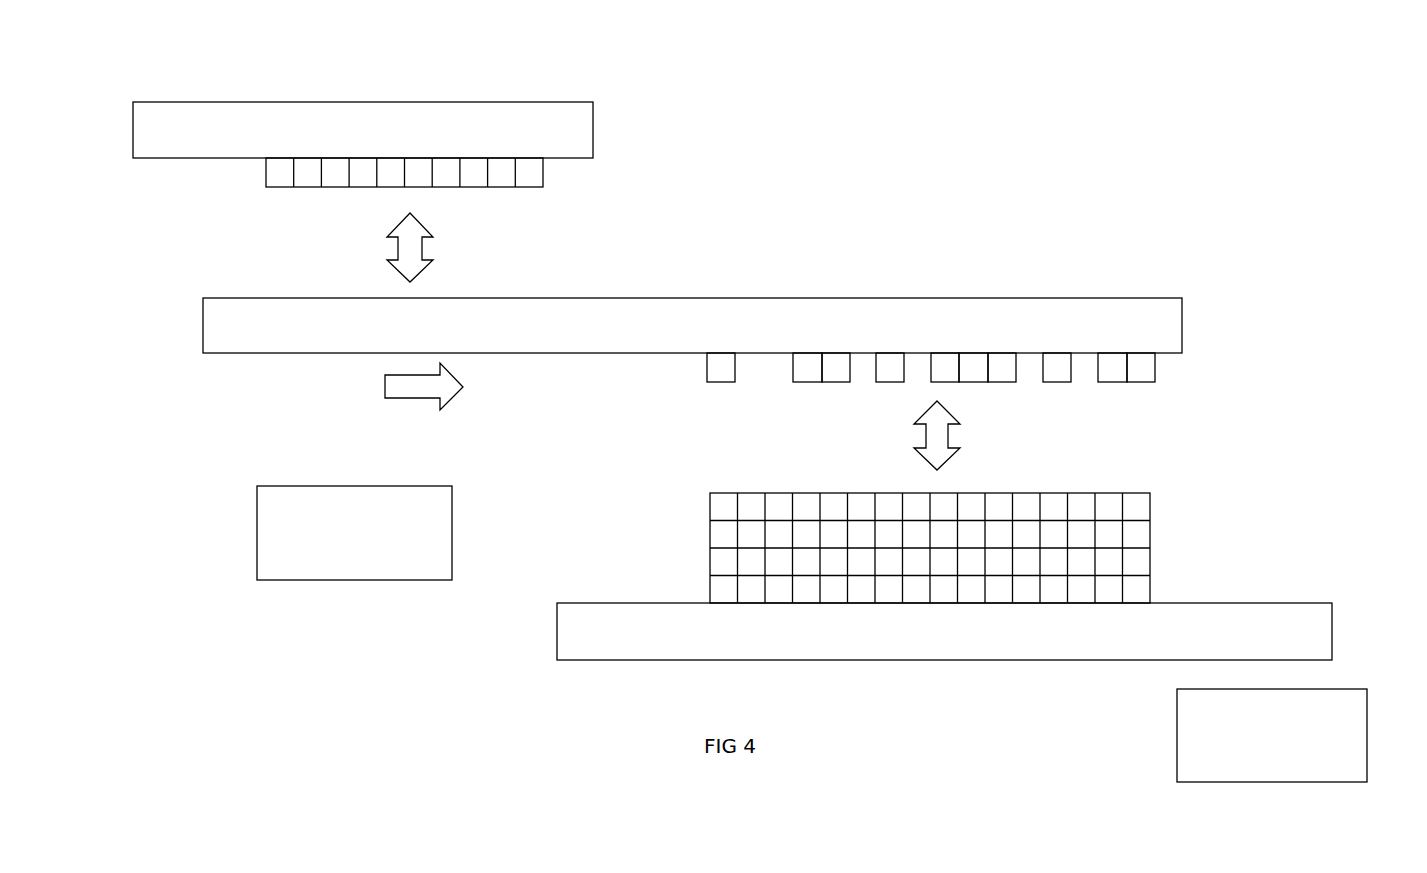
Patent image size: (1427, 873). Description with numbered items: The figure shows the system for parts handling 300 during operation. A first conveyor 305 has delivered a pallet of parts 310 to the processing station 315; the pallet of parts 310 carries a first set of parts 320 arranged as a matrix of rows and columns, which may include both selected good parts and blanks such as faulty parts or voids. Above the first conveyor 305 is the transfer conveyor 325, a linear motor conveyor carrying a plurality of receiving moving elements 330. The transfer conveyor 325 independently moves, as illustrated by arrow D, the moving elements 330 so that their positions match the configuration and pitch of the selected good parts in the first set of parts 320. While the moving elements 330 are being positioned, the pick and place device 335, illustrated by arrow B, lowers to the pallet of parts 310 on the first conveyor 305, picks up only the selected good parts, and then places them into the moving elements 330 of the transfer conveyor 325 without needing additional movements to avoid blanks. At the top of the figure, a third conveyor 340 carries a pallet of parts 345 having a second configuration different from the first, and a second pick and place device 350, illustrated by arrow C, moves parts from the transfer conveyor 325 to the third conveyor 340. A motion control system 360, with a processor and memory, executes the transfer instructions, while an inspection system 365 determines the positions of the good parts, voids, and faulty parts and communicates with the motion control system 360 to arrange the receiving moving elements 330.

The system for parts handling 300 is at (1013, 147).
The first conveyor 305 is at (1296, 607).
The pallet of parts 310 is at (1105, 490).
The processing station 315 is at (647, 513).
The parts 320 is at (982, 473).
The transfer conveyor 325 is at (1122, 298).
The moving elements 330 is at (812, 367).
The pick and place device 335 is at (916, 410).
The third conveyor 340 is at (537, 117).
The pallet of parts 345 is at (510, 210).
The second pick and place device 350 is at (413, 232).
The motion control system 360 is at (310, 582).
The inspection system 365 is at (1190, 710).